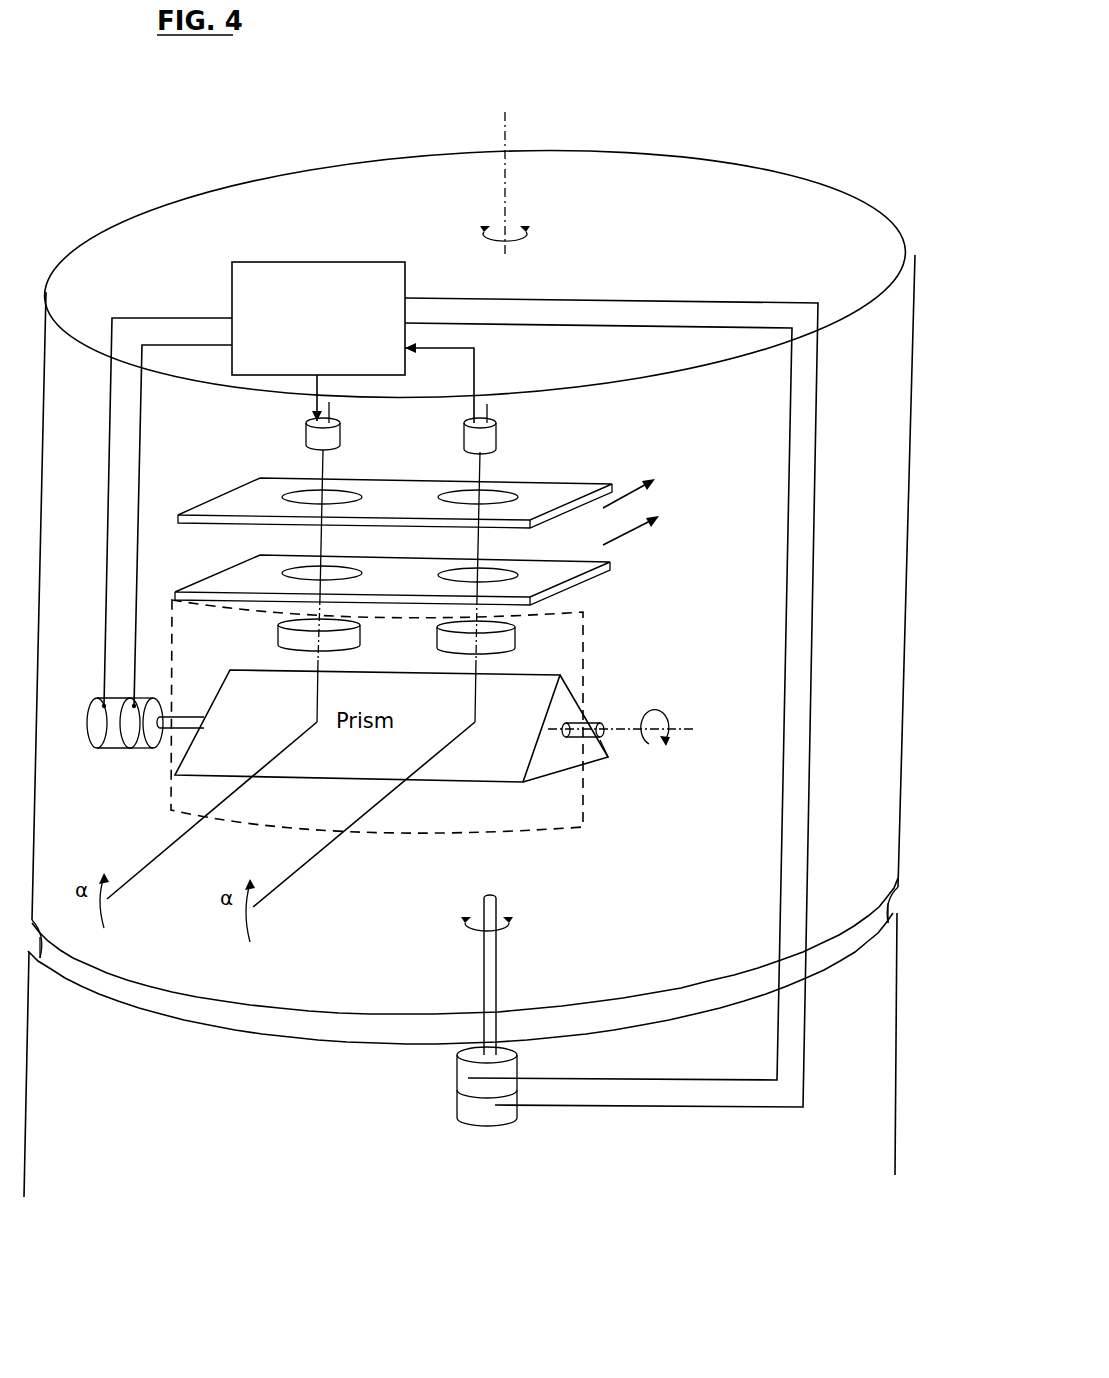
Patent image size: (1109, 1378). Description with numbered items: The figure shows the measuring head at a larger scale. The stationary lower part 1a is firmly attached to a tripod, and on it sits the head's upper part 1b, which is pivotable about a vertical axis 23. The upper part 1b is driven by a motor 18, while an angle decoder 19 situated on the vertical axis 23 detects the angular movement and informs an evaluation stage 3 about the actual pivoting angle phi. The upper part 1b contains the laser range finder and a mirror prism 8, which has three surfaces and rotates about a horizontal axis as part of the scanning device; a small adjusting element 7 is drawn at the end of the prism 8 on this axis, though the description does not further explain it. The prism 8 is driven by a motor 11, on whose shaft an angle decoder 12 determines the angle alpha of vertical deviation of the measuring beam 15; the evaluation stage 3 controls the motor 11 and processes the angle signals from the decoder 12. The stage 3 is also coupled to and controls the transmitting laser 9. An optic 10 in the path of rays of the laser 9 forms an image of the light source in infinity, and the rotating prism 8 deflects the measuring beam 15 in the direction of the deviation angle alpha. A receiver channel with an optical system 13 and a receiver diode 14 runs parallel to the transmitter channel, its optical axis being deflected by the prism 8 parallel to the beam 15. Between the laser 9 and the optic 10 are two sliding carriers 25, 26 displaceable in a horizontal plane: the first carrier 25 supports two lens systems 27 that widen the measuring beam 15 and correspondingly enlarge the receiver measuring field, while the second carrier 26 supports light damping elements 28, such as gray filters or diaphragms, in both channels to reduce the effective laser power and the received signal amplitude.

The lower part of measuring head 1a is at (897, 1025).
The upper part of measuring head 1b is at (854, 196).
The evaluation stage 3 is at (375, 273).
The adjusting knob 7 is at (587, 725).
The mirror prism 8 is at (598, 755).
The transmitting laser 9 is at (306, 433).
The optic 10 is at (278, 633).
The motor 11 is at (132, 752).
The angle decoder 12 is at (101, 752).
The optical system 13 is at (512, 637).
The receiver diode 14 is at (496, 435).
The measuring beam 15 is at (172, 843).
The motor 18 is at (468, 1077).
The angle decoder 19 is at (467, 1110).
The vertical axis 23 is at (507, 136).
The first sliding carrier 25 is at (395, 486).
The second sliding carrier 26 is at (392, 566).
The lens system 27 is at (357, 492).
The light damping element 28 is at (355, 568).